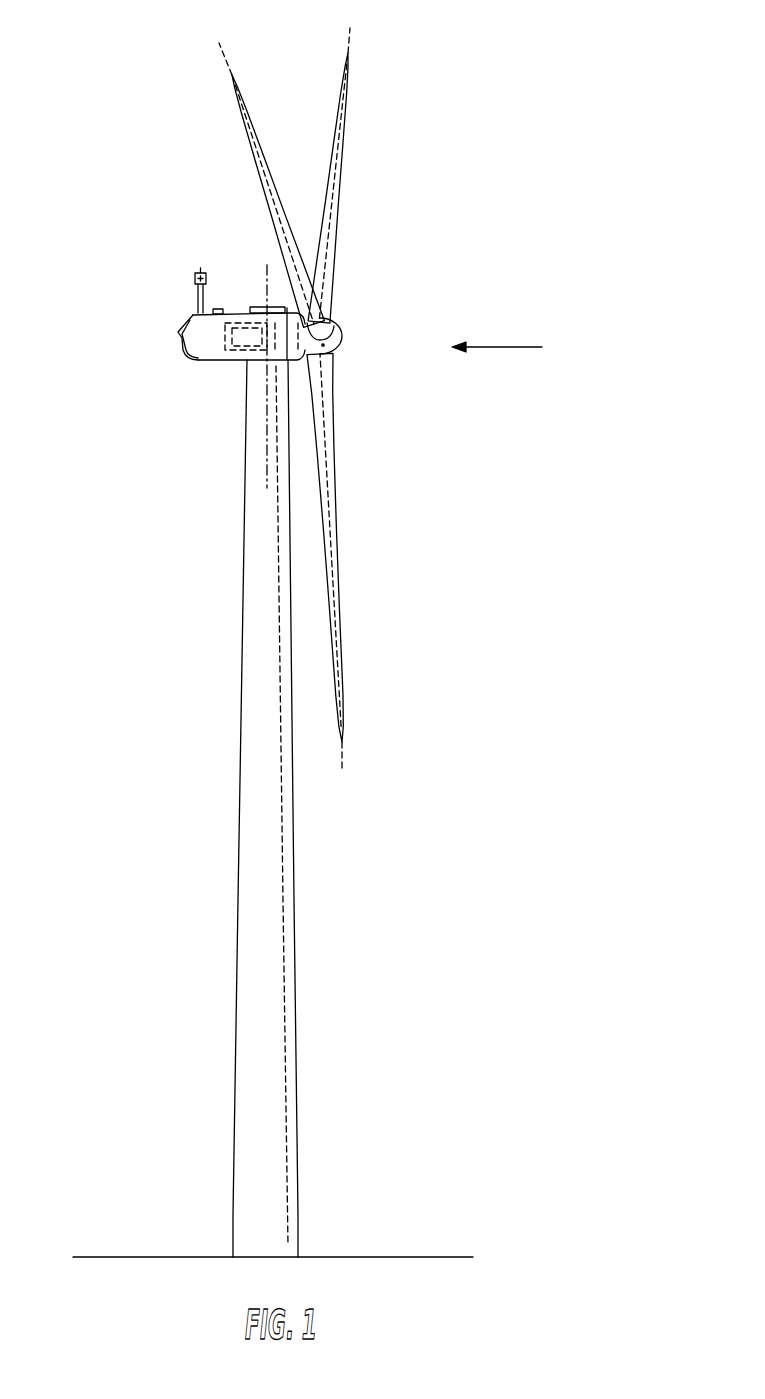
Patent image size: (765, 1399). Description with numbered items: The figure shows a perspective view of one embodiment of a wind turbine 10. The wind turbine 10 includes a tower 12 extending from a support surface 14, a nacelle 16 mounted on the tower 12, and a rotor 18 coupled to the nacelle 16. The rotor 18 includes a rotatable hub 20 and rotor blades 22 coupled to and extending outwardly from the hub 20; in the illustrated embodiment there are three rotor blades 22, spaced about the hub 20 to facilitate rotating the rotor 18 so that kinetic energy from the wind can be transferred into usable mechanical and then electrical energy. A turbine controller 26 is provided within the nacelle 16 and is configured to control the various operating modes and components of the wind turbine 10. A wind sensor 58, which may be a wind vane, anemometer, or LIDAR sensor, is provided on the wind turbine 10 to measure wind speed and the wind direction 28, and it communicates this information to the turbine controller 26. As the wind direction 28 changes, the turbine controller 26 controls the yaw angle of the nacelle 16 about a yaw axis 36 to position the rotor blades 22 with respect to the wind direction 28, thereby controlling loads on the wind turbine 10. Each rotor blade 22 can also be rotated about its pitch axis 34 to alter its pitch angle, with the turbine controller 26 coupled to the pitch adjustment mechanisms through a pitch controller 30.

The wind turbine 10 is at (470, 178).
The tower 12 is at (290, 938).
The support surface 14 is at (155, 1257).
The nacelle 16 is at (212, 362).
The rotor 18 is at (353, 311).
The rotatable hub 20 is at (347, 331).
The rotor blade 22 is at (333, 165).
The turbine controller 26 is at (247, 322).
The wind direction 28 is at (502, 347).
The pitch controller 30 is at (322, 345).
The pitch axis 34 is at (227, 62).
The yaw axis 36 is at (267, 428).
The wind sensor 58 is at (200, 298).